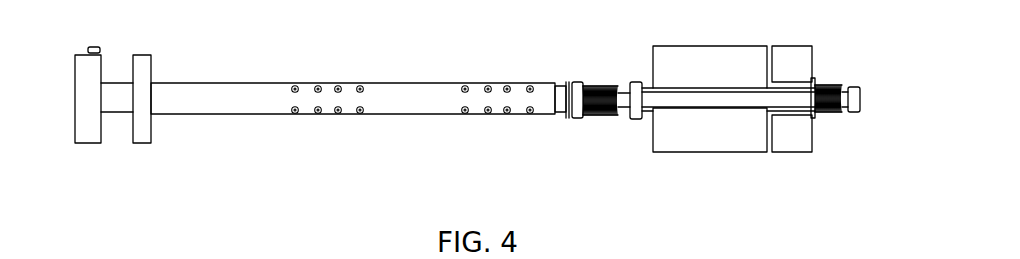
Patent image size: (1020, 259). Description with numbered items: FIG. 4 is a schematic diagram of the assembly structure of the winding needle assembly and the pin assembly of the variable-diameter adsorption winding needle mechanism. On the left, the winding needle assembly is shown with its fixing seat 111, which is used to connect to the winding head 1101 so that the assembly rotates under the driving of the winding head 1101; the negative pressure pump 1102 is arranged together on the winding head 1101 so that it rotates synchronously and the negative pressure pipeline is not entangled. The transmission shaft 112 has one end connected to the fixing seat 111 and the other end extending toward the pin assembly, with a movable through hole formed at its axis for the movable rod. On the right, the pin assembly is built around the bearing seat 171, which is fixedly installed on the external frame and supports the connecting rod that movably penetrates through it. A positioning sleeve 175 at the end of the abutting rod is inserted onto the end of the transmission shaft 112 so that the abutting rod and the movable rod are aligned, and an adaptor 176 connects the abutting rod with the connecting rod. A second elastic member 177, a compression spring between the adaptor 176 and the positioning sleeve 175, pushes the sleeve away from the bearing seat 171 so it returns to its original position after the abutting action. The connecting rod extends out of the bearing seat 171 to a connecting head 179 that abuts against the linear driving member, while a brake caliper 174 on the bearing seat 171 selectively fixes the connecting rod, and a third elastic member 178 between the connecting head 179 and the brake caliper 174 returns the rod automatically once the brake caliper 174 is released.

The winding head 1101 is at (88, 55).
The negative pressure pump 1102 is at (93, 47).
The fixing seat 111 is at (142, 143).
The transmission shaft 112 is at (225, 82).
The bearing seat 171 is at (717, 115).
The brake caliper 174 is at (782, 75).
The positioning sleeve 175 is at (583, 83).
The adaptor 176 is at (637, 82).
The second elastic member 177 is at (587, 116).
The third elastic member 178 is at (825, 112).
The connecting head 179 is at (851, 87).